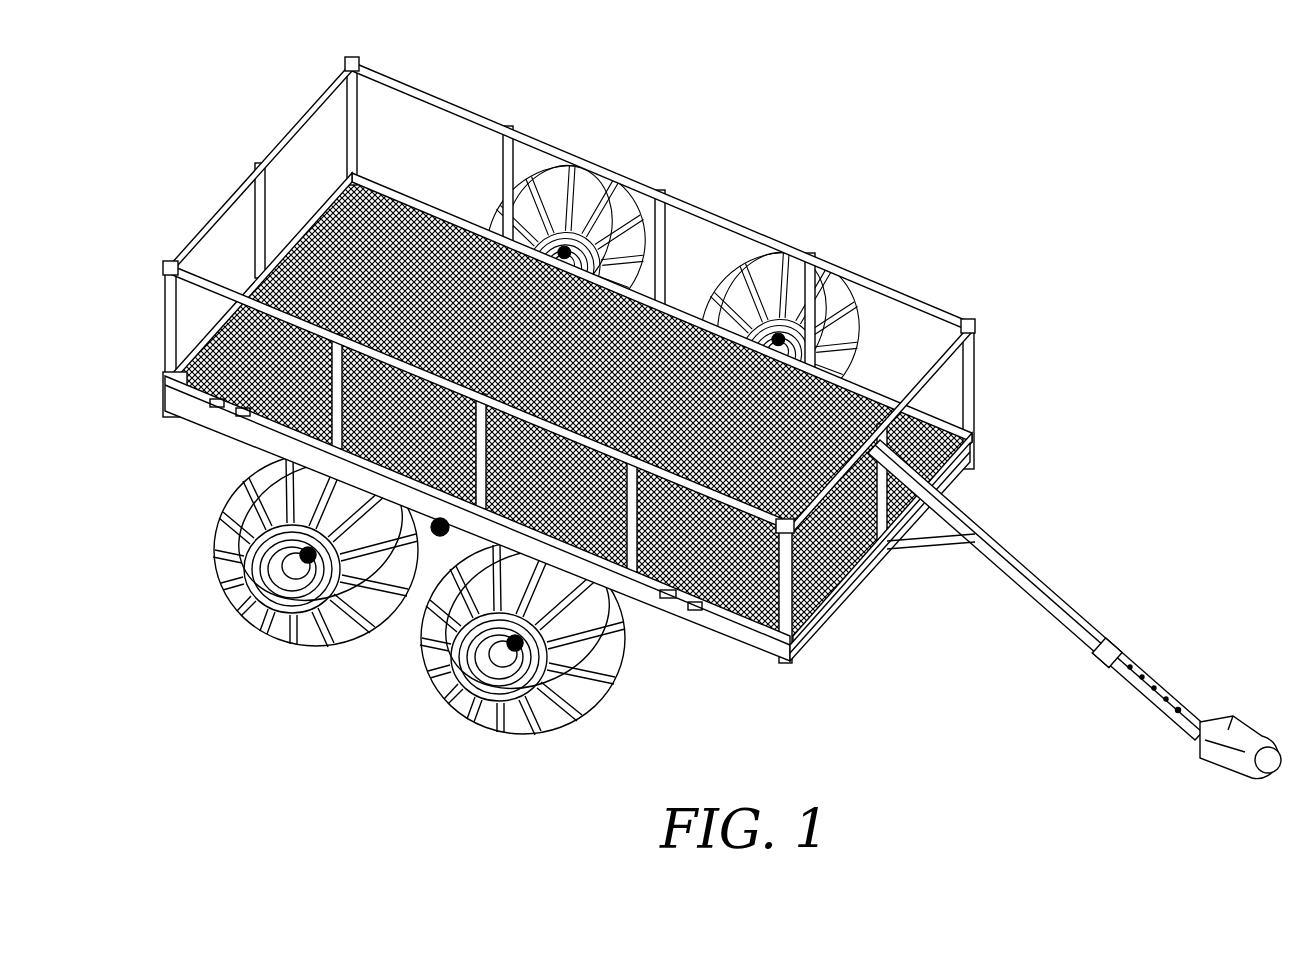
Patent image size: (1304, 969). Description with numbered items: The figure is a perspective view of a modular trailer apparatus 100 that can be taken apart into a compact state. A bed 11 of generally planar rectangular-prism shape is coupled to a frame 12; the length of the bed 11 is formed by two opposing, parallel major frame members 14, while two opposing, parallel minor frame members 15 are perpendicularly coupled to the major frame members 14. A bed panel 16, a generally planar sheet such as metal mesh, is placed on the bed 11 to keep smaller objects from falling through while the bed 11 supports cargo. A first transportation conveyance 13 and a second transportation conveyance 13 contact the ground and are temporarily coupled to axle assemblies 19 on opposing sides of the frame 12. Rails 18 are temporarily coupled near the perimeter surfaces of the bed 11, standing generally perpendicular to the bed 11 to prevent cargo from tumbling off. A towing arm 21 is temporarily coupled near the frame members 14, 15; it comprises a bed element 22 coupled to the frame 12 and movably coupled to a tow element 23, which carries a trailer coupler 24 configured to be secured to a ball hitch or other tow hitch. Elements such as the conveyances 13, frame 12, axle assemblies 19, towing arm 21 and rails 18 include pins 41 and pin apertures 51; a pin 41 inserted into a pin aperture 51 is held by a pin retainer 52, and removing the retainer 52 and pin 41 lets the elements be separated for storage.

The modular trailer apparatus 100 is at (791, 118).
The bed 11 is at (413, 207).
The frame 12 is at (790, 655).
The transportation conveyance 13 is at (606, 180).
The major frame member 14 is at (977, 433).
The minor frame member 15 is at (962, 470).
The bed panel 16 is at (838, 590).
The rail 18 is at (489, 120).
The axle assembly 19 is at (440, 536).
The towing arm 21 is at (1074, 609).
The bed element 22 is at (1033, 548).
The tow element 23 is at (1143, 667).
The trailer coupler 24 is at (1240, 723).
The pin 41 is at (1097, 660).
The pin aperture 51 is at (1167, 707).
The pin retainer 52 is at (366, 66).